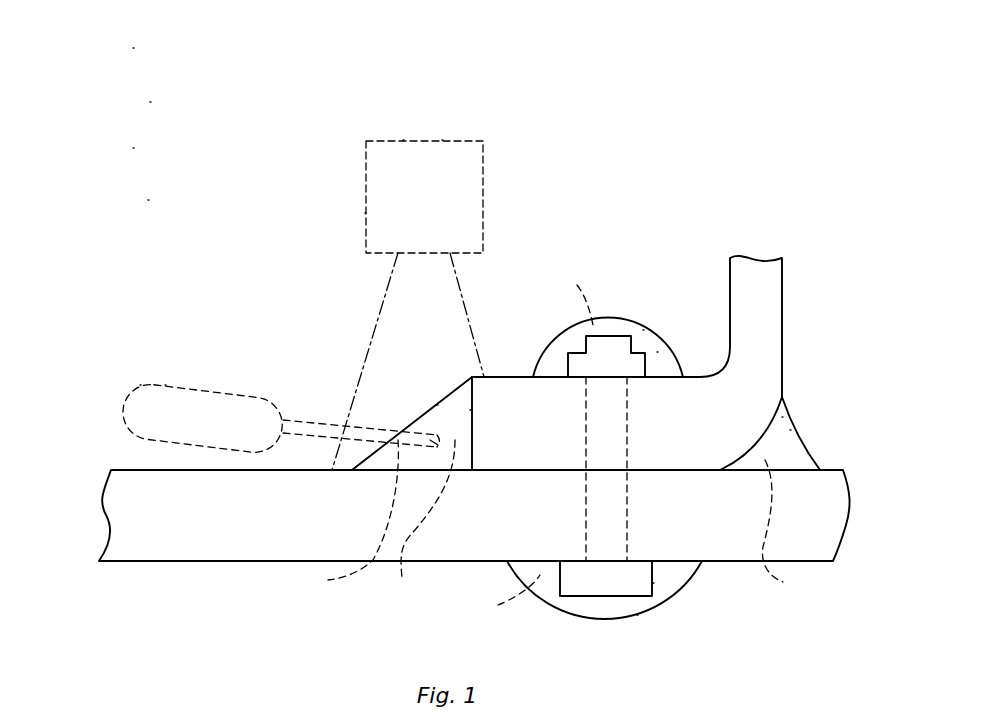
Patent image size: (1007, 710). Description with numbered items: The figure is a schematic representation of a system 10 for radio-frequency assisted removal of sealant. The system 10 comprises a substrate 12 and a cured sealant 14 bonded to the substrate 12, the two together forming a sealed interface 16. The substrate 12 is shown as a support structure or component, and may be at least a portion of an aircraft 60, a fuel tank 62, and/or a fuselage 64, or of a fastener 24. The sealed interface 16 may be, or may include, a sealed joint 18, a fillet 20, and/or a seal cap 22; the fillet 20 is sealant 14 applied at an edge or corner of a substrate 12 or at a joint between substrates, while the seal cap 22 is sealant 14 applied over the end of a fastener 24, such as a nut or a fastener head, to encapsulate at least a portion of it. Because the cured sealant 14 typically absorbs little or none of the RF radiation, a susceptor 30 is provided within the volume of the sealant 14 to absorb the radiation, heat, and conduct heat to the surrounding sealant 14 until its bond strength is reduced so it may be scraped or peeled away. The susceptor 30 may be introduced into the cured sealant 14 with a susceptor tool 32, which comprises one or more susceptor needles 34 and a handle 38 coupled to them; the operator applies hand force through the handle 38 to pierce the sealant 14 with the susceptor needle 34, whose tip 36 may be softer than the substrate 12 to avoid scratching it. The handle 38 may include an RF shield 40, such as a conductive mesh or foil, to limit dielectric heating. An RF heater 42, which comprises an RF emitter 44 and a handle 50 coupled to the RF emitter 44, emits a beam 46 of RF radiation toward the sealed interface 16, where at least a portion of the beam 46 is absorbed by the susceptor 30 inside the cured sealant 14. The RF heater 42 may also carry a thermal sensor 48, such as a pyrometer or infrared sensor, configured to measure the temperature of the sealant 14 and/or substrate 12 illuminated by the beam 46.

The system 10 is at (133, 48).
The substrate 12 is at (730, 278).
The cured sealant 14 is at (427, 403).
The sealed interface 16 is at (470, 410).
The sealed joint 18 is at (470, 470).
The fillet 20 is at (438, 405).
The seal cap 22 is at (643, 330).
The fastener 24 is at (568, 368).
The susceptor 30 is at (552, 440).
The susceptor tool 32 is at (240, 393).
The susceptor needle 34 is at (317, 423).
The tip 36 is at (437, 443).
The handle 38 is at (165, 385).
The RF shield 40 is at (140, 385).
The RF heater 42 is at (365, 172).
The RF emitter 44 is at (365, 213).
The beam 46 is at (463, 290).
The thermal sensor 48 is at (442, 140).
The handle 50 is at (403, 140).
The aircraft 60 is at (150, 102).
The fuel tank 62 is at (133, 148).
The fuselage 64 is at (148, 200).